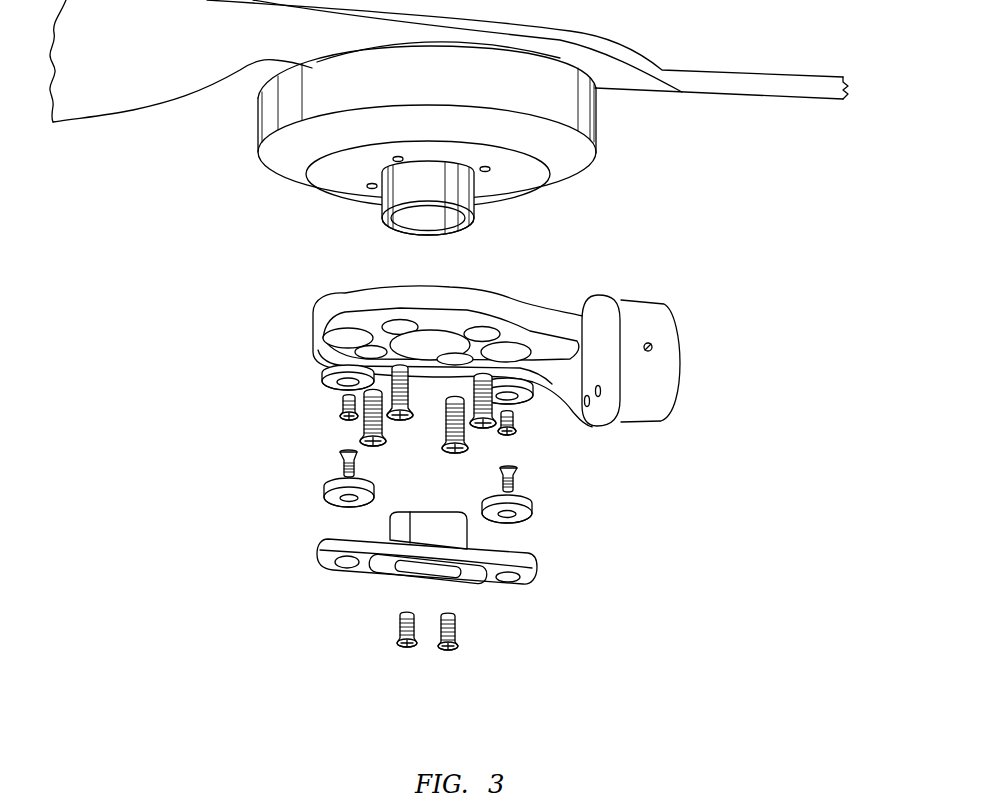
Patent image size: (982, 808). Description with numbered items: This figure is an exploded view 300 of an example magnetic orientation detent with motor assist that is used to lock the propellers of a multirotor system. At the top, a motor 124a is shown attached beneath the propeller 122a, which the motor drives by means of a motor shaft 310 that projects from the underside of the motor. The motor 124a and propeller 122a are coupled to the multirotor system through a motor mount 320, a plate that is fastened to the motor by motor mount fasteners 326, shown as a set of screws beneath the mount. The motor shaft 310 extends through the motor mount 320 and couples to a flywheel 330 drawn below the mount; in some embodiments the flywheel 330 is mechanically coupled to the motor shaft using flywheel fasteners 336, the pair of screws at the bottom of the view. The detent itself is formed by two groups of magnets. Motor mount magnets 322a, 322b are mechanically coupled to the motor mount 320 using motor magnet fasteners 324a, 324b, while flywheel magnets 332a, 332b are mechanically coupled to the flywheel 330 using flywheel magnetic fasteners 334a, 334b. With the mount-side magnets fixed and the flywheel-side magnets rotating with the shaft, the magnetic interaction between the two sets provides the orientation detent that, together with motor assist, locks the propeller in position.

The exploded view 300 is at (105, 642).
The propeller 122a is at (770, 70).
The motor 124a is at (597, 142).
The motor shaft 310 is at (382, 197).
The motor mount 320 is at (663, 350).
The motor mount magnet 322a is at (322, 374).
The motor mount magnet 322b is at (533, 398).
The motor magnet fastener 324a is at (341, 407).
The motor magnet fastener 324b is at (518, 428).
The motor mount fasteners 326 is at (358, 444).
The flywheel 330 is at (537, 566).
The flywheel magnet 332a is at (324, 490).
The flywheel magnet 332b is at (532, 507).
The flywheel magnetic fastener 334a is at (340, 460).
The flywheel magnetic fastener 334b is at (518, 478).
The flywheel fasteners 336 is at (465, 612).